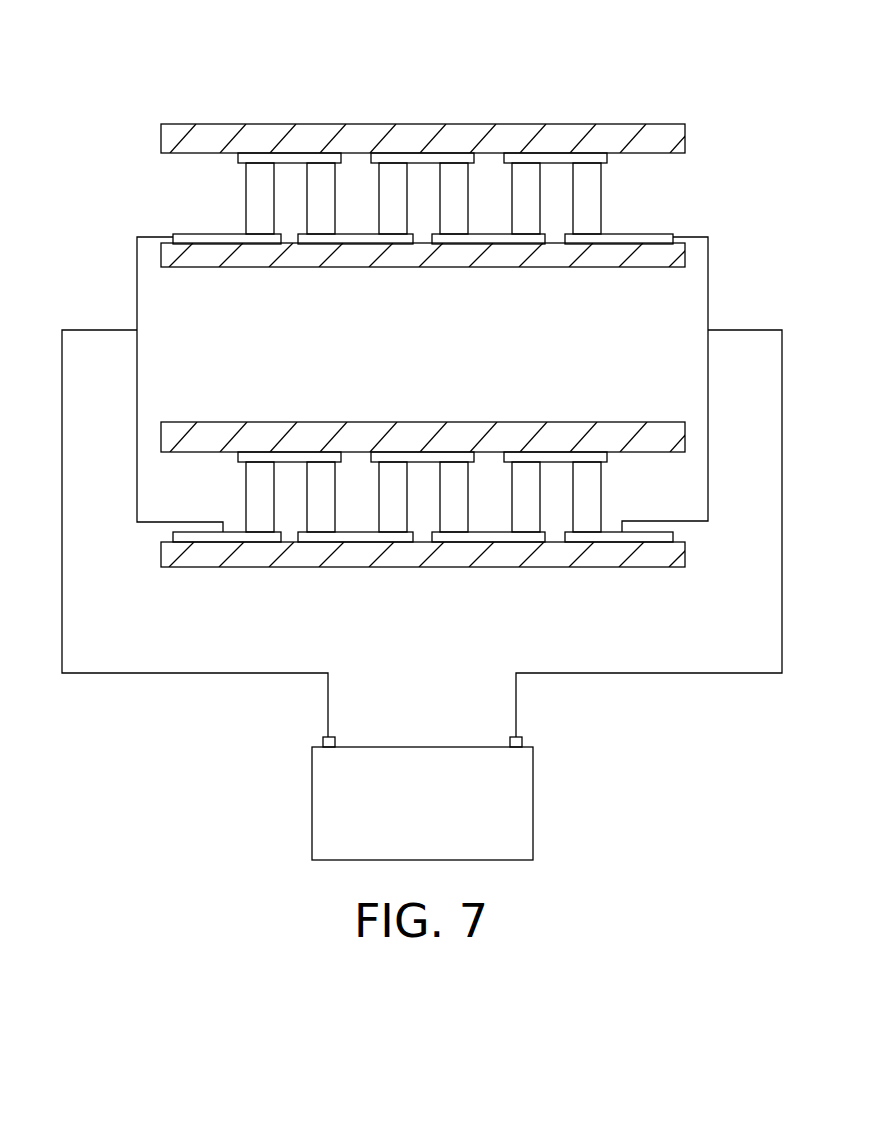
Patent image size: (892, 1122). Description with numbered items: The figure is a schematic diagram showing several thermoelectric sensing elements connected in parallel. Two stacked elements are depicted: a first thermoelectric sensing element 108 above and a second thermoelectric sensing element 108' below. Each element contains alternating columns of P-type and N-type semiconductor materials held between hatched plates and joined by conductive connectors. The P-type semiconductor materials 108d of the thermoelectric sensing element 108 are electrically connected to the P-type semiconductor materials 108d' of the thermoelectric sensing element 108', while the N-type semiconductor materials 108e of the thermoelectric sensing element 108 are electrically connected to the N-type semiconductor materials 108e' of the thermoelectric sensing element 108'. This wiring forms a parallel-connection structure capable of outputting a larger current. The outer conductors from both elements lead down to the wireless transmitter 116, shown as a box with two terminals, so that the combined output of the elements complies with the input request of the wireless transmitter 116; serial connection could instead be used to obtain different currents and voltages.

The thermoelectric sensing element 108 is at (385, 138).
The thermoelectric sensing element 108' is at (429, 442).
The P-type semiconductor material 108d is at (207, 198).
The N-type semiconductor material 108e is at (638, 198).
The P-type semiconductor material 108d' is at (207, 497).
The N-type semiconductor material 108e' is at (640, 497).
The wireless transmitter 116 is at (312, 841).